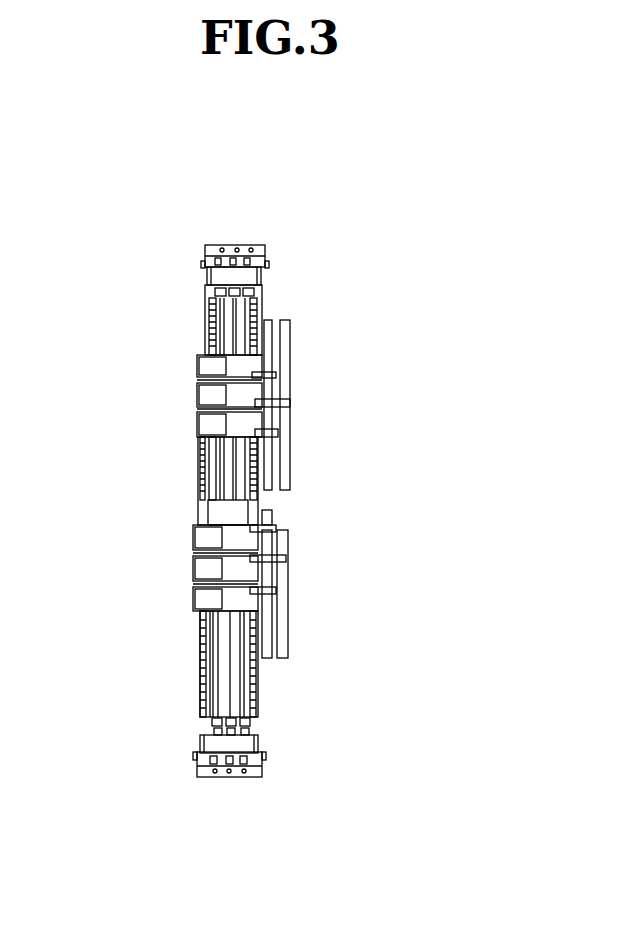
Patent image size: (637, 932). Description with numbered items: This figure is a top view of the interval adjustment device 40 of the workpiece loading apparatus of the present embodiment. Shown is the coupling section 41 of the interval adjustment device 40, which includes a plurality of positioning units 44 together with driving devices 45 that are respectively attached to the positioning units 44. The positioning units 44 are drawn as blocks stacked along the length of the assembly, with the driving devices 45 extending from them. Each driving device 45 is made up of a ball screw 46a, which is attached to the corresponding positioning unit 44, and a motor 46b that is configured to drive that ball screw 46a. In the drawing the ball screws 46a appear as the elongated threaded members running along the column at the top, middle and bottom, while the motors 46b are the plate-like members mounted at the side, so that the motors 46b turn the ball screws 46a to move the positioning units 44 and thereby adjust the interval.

The interval adjustment device 40 is at (292, 508).
The coupling section 41 is at (408, 296).
The positioning unit 44 is at (205, 360).
The driving device 45 is at (251, 503).
The ball screw 46a is at (298, 745).
The motor 46b is at (290, 345).